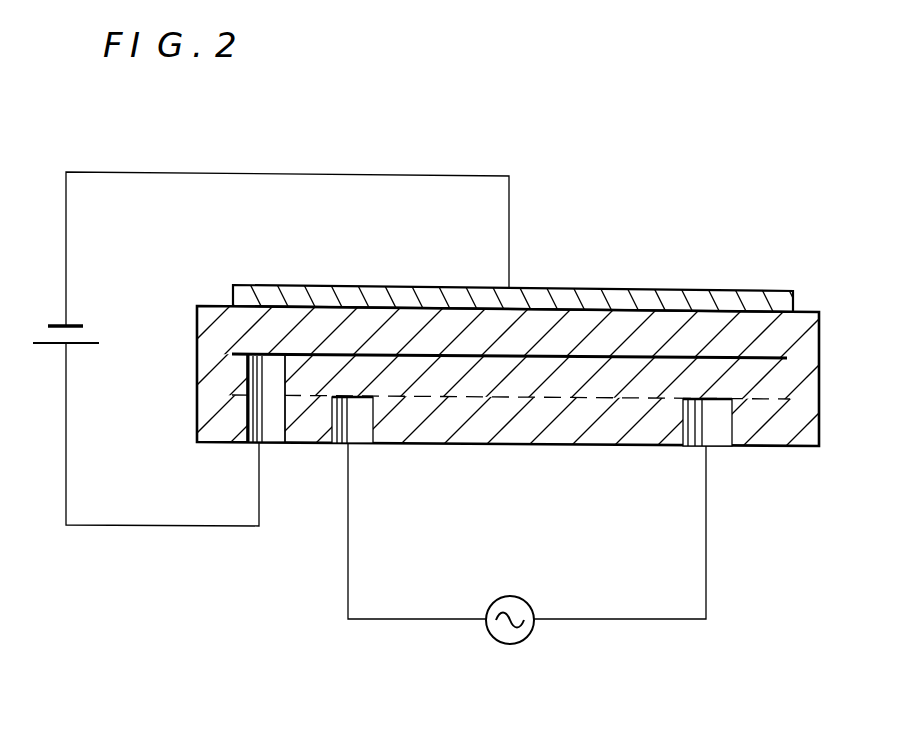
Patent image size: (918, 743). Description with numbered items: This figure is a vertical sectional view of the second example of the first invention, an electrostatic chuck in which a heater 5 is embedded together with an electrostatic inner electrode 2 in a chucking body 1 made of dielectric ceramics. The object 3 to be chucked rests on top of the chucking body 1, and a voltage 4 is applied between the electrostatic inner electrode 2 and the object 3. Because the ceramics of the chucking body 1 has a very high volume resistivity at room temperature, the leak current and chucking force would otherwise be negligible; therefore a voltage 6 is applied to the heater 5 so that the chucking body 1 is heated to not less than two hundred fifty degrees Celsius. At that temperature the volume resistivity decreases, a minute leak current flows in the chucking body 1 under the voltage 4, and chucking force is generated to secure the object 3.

The chucking body 1 is at (803, 316).
The electrostatic inner electrode 2 is at (786, 359).
The object to be chucked 3 is at (752, 290).
The voltage 4 is at (74, 324).
The heater 5 is at (768, 401).
The voltage 6 is at (517, 597).